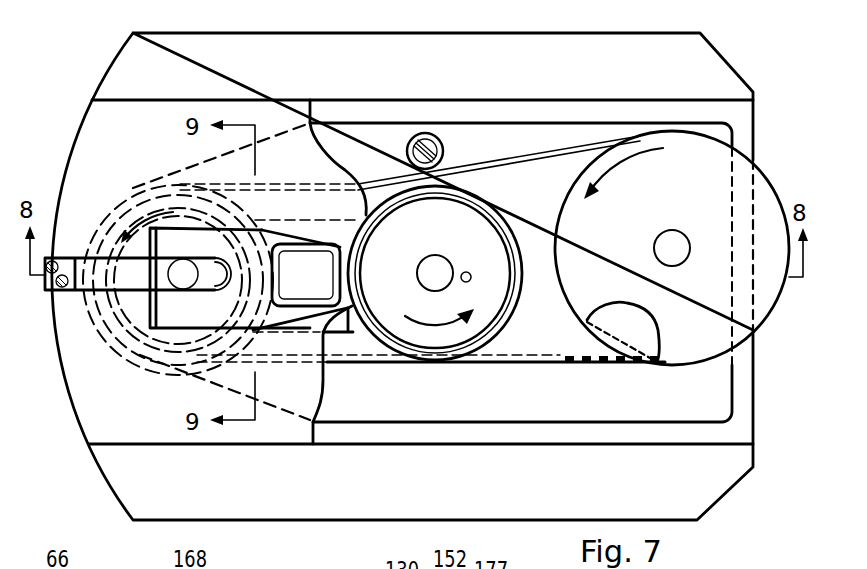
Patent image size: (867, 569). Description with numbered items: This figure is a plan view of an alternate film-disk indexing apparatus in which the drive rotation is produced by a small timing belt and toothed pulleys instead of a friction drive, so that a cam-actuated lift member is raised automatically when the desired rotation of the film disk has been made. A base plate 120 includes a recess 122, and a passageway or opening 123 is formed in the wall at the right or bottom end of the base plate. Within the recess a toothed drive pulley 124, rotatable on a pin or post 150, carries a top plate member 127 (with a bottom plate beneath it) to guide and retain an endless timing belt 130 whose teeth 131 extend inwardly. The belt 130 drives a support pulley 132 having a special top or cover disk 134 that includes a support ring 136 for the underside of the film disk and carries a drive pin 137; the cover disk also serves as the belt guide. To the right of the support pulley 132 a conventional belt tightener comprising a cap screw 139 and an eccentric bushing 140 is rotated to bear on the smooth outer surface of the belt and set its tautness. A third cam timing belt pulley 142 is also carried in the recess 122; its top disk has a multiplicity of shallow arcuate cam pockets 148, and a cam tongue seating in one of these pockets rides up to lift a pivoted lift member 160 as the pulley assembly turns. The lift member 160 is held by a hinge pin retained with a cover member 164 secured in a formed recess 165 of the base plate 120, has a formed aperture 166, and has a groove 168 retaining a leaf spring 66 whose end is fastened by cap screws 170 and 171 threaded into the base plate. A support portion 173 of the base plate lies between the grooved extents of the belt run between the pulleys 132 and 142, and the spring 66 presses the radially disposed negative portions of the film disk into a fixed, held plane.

The base plate 120 is at (405, 50).
The recess 122 is at (430, 126).
The passageway or opening 123 is at (740, 143).
The drive pulley 124 is at (668, 197).
The top plate member 127 is at (667, 363).
The belt 130 is at (552, 365).
The teeth 131 is at (562, 355).
The support pulley 132 is at (437, 235).
The cover disk 134 is at (478, 205).
The support ring 136 is at (497, 228).
The drive pin 137 is at (470, 274).
The cap screw 139 is at (441, 146).
The eccentric bushing 140 is at (406, 154).
The third cam timing belt pulley 142 is at (160, 352).
The arcuate cam pockets 148 is at (104, 340).
The pin or post 150 is at (677, 242).
The pivoted lift member 160 is at (190, 238).
The cover member 164 is at (85, 420).
The formed recess 165 is at (192, 100).
The formed aperture 166 is at (293, 265).
The groove 168 is at (232, 290).
The cap screw 170 is at (60, 287).
The cap screw 171 is at (55, 261).
The support portion 173 is at (342, 334).
The leaf spring 66 is at (130, 283).